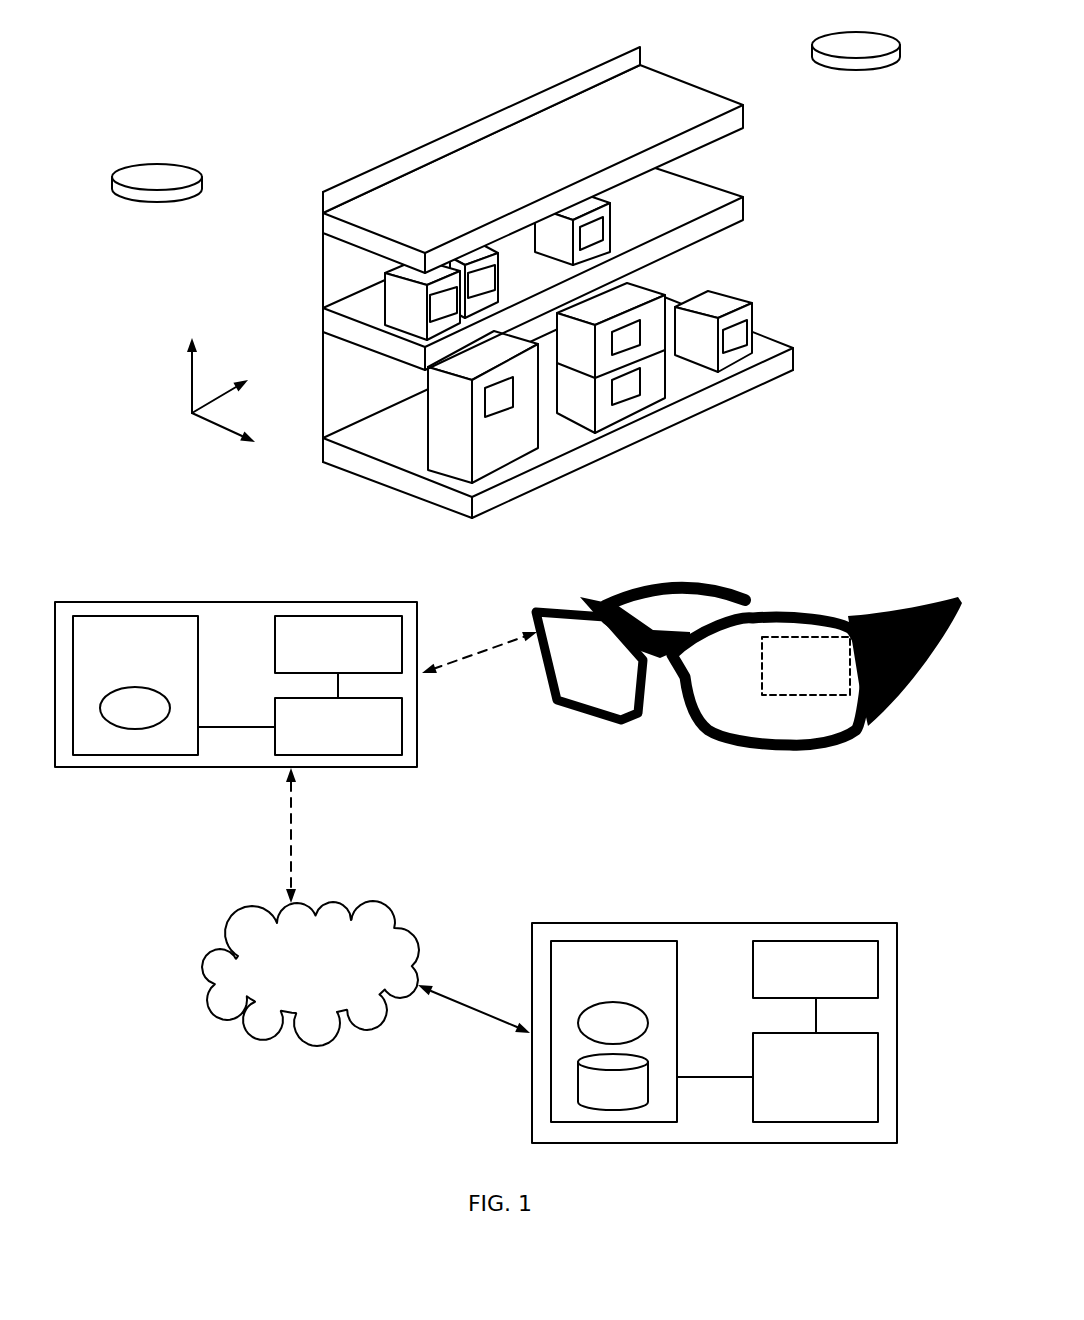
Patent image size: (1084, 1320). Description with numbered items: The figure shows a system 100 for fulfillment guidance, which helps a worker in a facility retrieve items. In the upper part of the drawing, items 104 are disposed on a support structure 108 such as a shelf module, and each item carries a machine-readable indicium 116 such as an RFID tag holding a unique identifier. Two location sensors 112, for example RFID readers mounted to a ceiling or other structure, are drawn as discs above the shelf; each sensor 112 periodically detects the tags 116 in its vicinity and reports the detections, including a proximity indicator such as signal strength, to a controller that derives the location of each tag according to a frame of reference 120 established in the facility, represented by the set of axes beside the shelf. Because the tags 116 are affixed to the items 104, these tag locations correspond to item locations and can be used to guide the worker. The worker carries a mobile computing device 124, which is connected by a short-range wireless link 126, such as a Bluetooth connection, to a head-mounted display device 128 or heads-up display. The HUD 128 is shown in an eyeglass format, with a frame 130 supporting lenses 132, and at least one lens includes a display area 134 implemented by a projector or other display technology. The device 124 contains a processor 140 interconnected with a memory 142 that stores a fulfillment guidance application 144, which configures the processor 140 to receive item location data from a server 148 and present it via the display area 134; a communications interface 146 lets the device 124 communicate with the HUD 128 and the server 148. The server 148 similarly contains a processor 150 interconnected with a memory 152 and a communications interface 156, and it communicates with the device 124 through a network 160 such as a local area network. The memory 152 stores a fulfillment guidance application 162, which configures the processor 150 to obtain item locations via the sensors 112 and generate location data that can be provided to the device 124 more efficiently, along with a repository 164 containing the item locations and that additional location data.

The system 100 is at (202, 107).
The items 104 is at (395, 297).
The support structure 108 is at (395, 175).
The location sensors 112 is at (140, 203).
The machine-readable indicia 116 is at (740, 328).
The frame of reference 120 is at (200, 420).
The mobile computing device 124 is at (229, 730).
The short-range wireless link 126 is at (479, 647).
The head-mounted display device 128 is at (749, 623).
The frame 130 is at (855, 617).
The lenses 132 is at (571, 676).
The display area 134 is at (788, 679).
The processor 140 is at (319, 726).
The memory 142 is at (116, 644).
The fulfillment guidance application 144 is at (116, 719).
The communications interface 146 is at (319, 643).
The server 148 is at (644, 1033).
The processor 150 is at (797, 1078).
The memory 152 is at (594, 972).
The communications interface 156 is at (797, 971).
The network 160 is at (293, 973).
The fulfillment guidance application 162 is at (594, 1034).
The repository 164 is at (594, 1098).